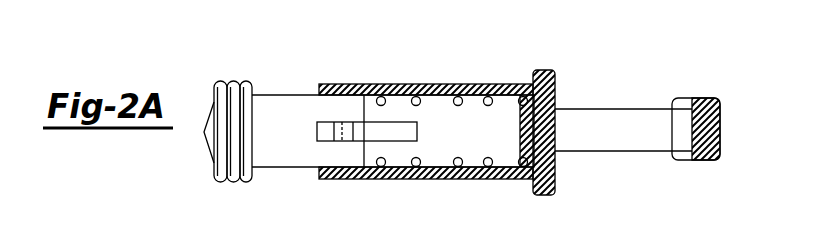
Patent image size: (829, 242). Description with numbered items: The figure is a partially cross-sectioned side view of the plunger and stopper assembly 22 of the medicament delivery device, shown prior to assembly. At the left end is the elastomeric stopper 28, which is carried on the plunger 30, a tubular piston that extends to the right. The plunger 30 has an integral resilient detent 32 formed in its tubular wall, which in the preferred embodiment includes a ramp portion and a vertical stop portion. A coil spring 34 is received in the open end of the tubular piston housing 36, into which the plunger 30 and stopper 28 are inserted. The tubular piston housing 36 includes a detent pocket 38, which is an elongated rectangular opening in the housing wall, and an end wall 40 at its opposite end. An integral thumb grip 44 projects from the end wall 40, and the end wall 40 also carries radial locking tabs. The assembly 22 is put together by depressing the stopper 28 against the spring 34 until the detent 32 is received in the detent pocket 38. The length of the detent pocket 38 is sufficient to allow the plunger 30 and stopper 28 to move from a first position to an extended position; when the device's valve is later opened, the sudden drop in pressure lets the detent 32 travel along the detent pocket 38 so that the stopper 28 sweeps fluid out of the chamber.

The plunger and stopper assembly 22 is at (333, 45).
The elastomeric stopper 28 is at (222, 178).
The plunger 30 is at (280, 95).
The detent 32 is at (321, 138).
The coil spring 34 is at (497, 98).
The tubular piston housing 36 is at (395, 84).
The detent pocket 38 is at (395, 133).
The end wall 40 is at (550, 193).
The thumb grip 44 is at (617, 118).